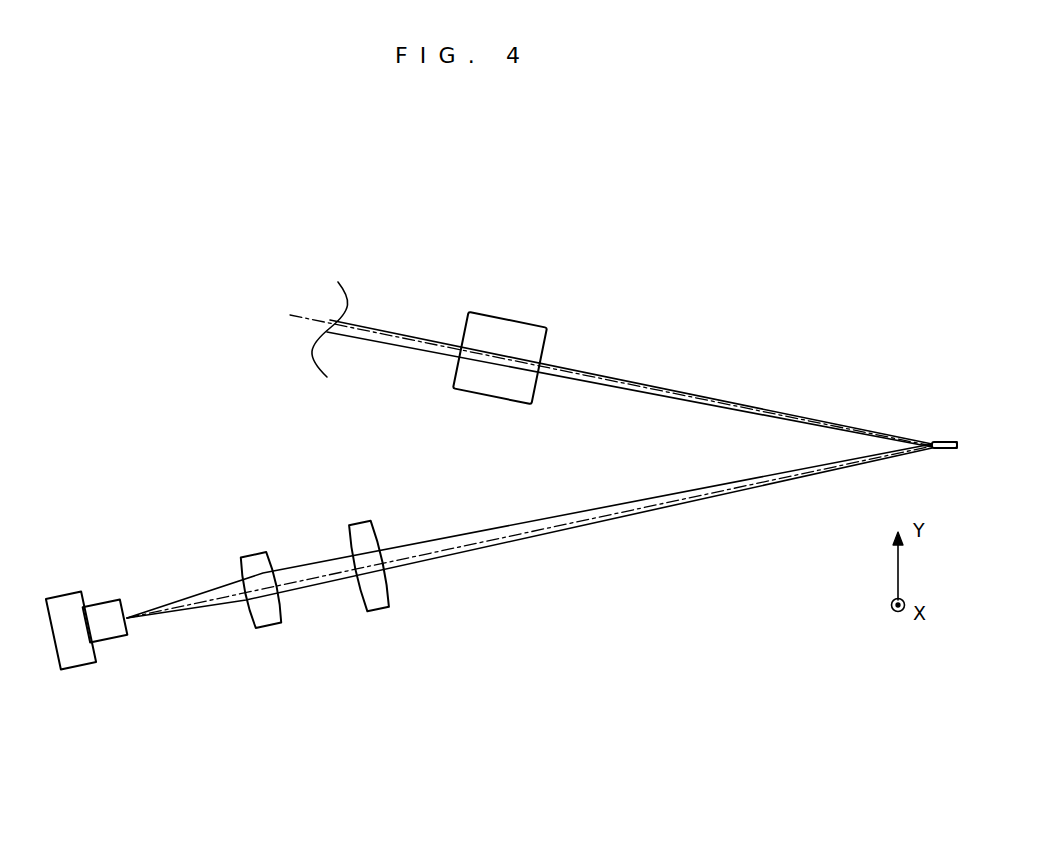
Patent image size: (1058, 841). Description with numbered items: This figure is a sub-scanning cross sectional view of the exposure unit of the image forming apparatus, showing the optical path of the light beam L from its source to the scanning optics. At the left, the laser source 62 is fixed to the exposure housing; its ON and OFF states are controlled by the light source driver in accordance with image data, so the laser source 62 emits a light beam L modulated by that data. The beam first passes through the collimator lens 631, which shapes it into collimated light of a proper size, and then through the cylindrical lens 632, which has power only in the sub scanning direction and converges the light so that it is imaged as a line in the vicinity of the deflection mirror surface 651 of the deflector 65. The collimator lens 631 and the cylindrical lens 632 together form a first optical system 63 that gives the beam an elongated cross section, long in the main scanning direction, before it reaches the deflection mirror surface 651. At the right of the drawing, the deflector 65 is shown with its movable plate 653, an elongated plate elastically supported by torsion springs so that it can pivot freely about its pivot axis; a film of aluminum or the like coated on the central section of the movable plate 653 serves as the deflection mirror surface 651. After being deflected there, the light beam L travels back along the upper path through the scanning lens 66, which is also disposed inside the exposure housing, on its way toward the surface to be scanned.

The laser source 62 is at (80, 657).
The first optical system 63 is at (323, 644).
The collimator lens 631 is at (270, 615).
The cylindrical lens 632 is at (380, 600).
The deflector 65 is at (870, 330).
The deflection mirror surface 651 is at (932, 442).
The movable plate 653 is at (938, 438).
The scanning lens 66 is at (502, 330).
The light beam L is at (610, 520).